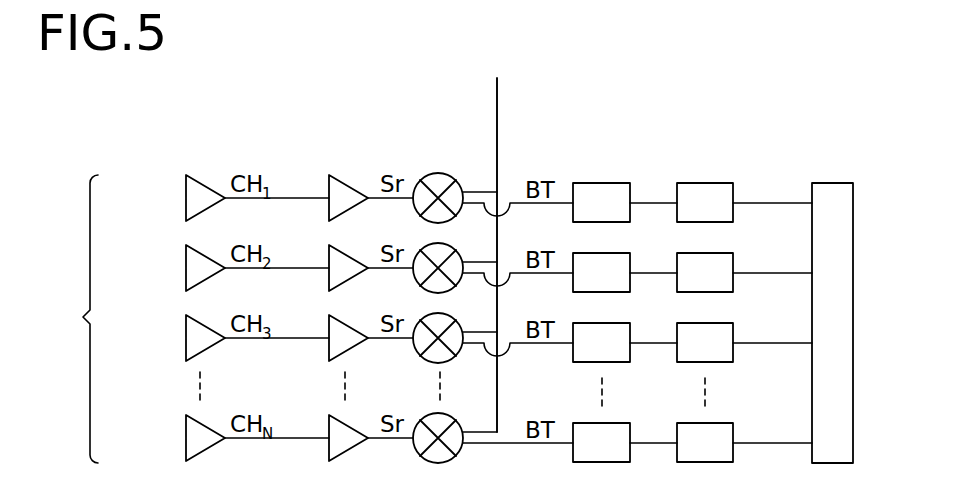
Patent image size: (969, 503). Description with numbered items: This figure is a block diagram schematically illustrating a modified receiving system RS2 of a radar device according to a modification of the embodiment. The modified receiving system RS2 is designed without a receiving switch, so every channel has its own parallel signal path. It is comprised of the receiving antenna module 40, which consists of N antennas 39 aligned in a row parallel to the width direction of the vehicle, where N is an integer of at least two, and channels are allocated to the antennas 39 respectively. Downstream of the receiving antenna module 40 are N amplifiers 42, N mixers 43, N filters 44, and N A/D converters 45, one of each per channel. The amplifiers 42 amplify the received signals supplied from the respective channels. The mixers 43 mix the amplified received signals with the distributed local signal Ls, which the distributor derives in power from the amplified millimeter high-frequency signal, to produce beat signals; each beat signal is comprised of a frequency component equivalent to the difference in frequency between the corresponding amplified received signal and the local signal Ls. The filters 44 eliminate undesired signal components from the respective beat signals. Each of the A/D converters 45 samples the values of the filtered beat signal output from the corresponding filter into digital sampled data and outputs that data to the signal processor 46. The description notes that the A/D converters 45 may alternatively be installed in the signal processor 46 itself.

The antennas 39 is at (186, 435).
The receiving antenna module 40 is at (72, 319).
The amplifiers 42 is at (348, 426).
The mixers 43 is at (438, 414).
The filters 44 is at (598, 423).
The A/D converters 45 is at (706, 423).
The signal processor 46 is at (832, 183).
The modified receiving system RS2 is at (147, 161).
The local signal Ls is at (497, 113).